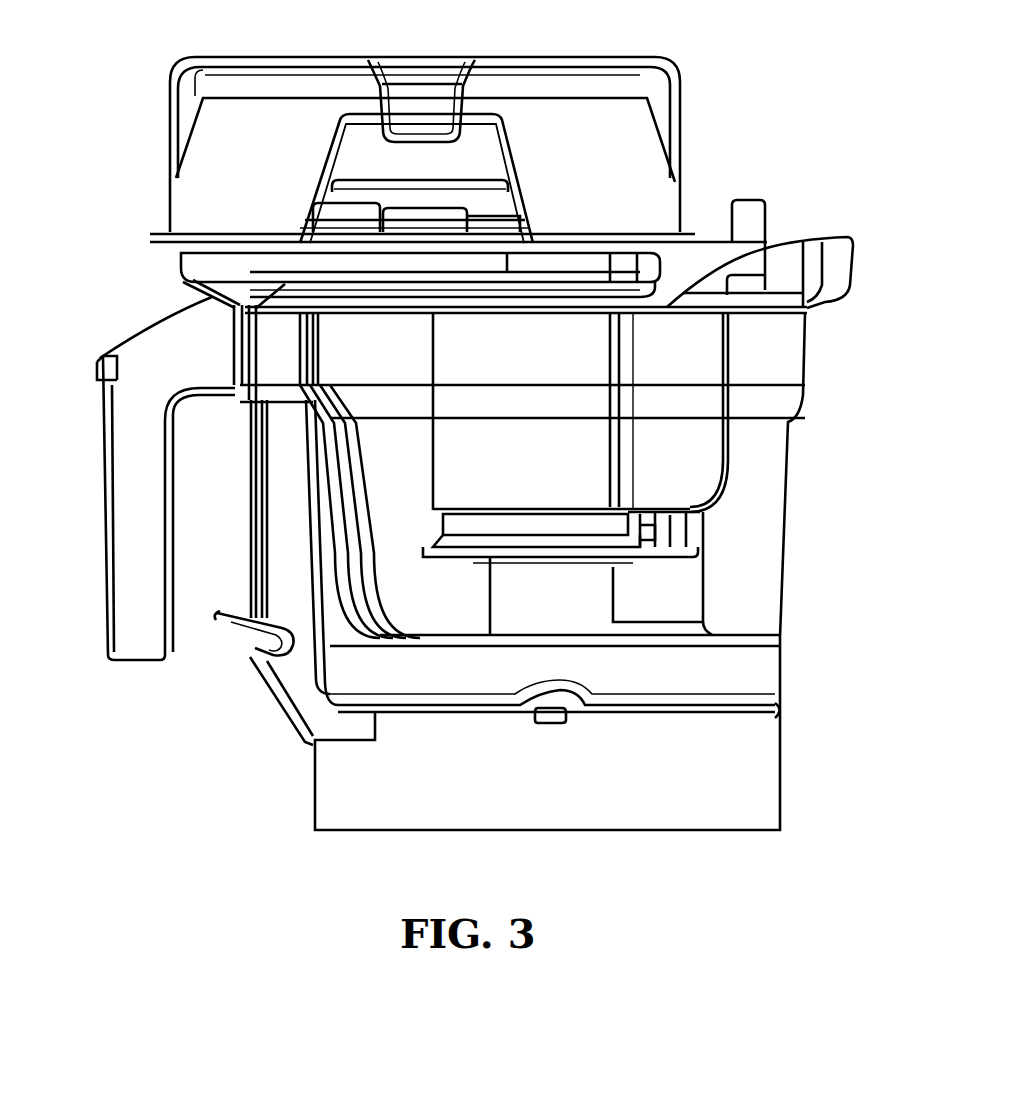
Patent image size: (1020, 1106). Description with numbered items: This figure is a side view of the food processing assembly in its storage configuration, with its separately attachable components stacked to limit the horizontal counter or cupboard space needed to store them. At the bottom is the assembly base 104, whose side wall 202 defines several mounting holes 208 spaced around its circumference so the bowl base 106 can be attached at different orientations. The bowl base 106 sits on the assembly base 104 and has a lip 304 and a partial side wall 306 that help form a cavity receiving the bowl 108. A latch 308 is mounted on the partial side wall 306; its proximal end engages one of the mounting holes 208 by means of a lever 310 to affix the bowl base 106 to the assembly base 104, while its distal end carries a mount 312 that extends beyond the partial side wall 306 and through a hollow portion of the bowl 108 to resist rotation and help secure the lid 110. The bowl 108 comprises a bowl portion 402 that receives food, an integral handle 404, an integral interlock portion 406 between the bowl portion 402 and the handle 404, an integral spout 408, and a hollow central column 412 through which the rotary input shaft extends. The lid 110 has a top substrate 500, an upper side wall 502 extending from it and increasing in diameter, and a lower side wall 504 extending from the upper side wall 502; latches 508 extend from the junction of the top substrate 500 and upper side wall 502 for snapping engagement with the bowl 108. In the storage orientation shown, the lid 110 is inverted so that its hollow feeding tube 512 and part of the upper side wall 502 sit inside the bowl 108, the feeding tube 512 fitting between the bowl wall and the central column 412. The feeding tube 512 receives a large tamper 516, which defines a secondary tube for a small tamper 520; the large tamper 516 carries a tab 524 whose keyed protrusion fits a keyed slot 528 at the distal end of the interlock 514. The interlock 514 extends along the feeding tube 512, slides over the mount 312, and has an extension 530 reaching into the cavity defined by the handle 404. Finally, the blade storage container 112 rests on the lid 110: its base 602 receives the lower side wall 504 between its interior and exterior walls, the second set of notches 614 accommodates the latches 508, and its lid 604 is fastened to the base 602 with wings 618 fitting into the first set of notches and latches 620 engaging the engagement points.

The assembly base 104 is at (783, 775).
The bowl base 106 is at (783, 660).
The bowl 108 is at (805, 350).
The lid 110 is at (723, 352).
The blade storage container 112 is at (236, 72).
The side wall 202 is at (328, 790).
The mounting holes 208 is at (545, 718).
The lip 304 is at (780, 638).
The partial side wall 306 is at (326, 587).
The latch 308 is at (250, 525).
The lever 310 is at (236, 634).
The mount 312 is at (257, 375).
The bowl portion 402 is at (770, 498).
The handle 404 is at (113, 440).
The interlock portion 406 is at (250, 315).
The spout 408 is at (848, 238).
The central column 412 is at (500, 597).
The top substrate 500 is at (540, 312).
The upper side wall 502 is at (205, 290).
The lower side wall 504 is at (178, 260).
The latches 508 is at (418, 300).
The feeding tube 512 is at (448, 475).
The interlock 514 is at (705, 470).
The large tamper 516 is at (445, 525).
The small tamper 520 is at (478, 562).
The tab 524 is at (677, 556).
The keyed slot 528 is at (688, 530).
The extension 530 is at (760, 222).
The base 602 is at (686, 202).
The lid 604 is at (640, 56).
The second set of notches 614 is at (505, 162).
The wings 618 is at (174, 130).
The latches 620 is at (427, 132).